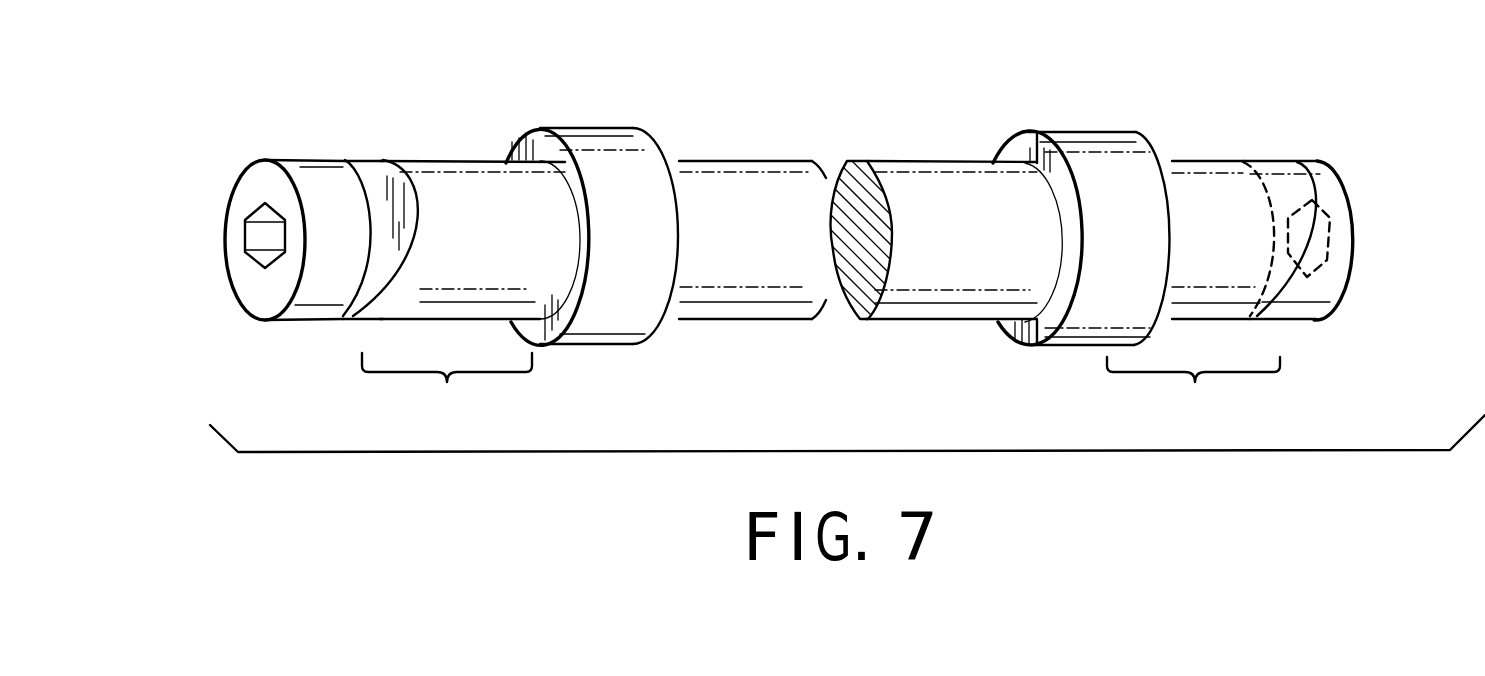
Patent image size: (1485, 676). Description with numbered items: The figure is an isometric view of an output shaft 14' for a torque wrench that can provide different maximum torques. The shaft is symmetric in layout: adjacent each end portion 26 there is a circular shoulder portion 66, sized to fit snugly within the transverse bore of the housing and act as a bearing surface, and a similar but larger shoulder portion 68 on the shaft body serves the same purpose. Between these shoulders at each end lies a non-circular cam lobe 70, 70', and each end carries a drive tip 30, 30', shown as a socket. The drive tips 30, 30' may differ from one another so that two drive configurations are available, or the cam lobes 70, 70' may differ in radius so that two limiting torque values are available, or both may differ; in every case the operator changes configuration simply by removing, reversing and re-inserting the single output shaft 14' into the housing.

The output shaft 14' is at (820, 186).
The shoulder portion 66 is at (265, 160).
The end portion 26 is at (327, 163).
The shoulder portion 68 is at (590, 142).
The drive tip 30 is at (212, 223).
The drive tip 30' is at (1377, 238).
The cam lobe 70 is at (447, 393).
The cam lobe 70' is at (1198, 395).